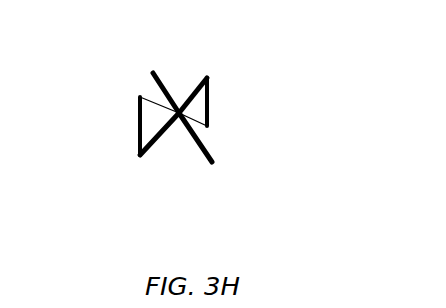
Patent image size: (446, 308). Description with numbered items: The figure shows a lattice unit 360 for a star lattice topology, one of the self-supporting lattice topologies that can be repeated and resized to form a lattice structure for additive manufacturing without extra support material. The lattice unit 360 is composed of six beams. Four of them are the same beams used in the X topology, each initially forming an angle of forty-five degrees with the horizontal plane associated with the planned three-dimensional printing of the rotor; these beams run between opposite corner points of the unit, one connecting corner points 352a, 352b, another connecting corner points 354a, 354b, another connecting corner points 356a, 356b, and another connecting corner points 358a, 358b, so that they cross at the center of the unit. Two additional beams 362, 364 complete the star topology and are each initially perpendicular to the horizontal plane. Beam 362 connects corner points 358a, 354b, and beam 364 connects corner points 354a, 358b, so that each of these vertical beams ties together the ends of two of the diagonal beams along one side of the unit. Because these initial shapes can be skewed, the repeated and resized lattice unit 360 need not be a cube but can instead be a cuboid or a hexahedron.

The lattice unit 360 is at (206, 64).
The corner point 352a is at (207, 98).
The corner point 352b is at (140, 131).
The corner point 354a is at (207, 78).
The corner point 354b is at (140, 155).
The corner point 356a is at (153, 73).
The corner point 356b is at (212, 162).
The corner point 358a is at (140, 97).
The corner point 358b is at (207, 126).
The beam 362 is at (140, 117).
The beam 364 is at (207, 88).